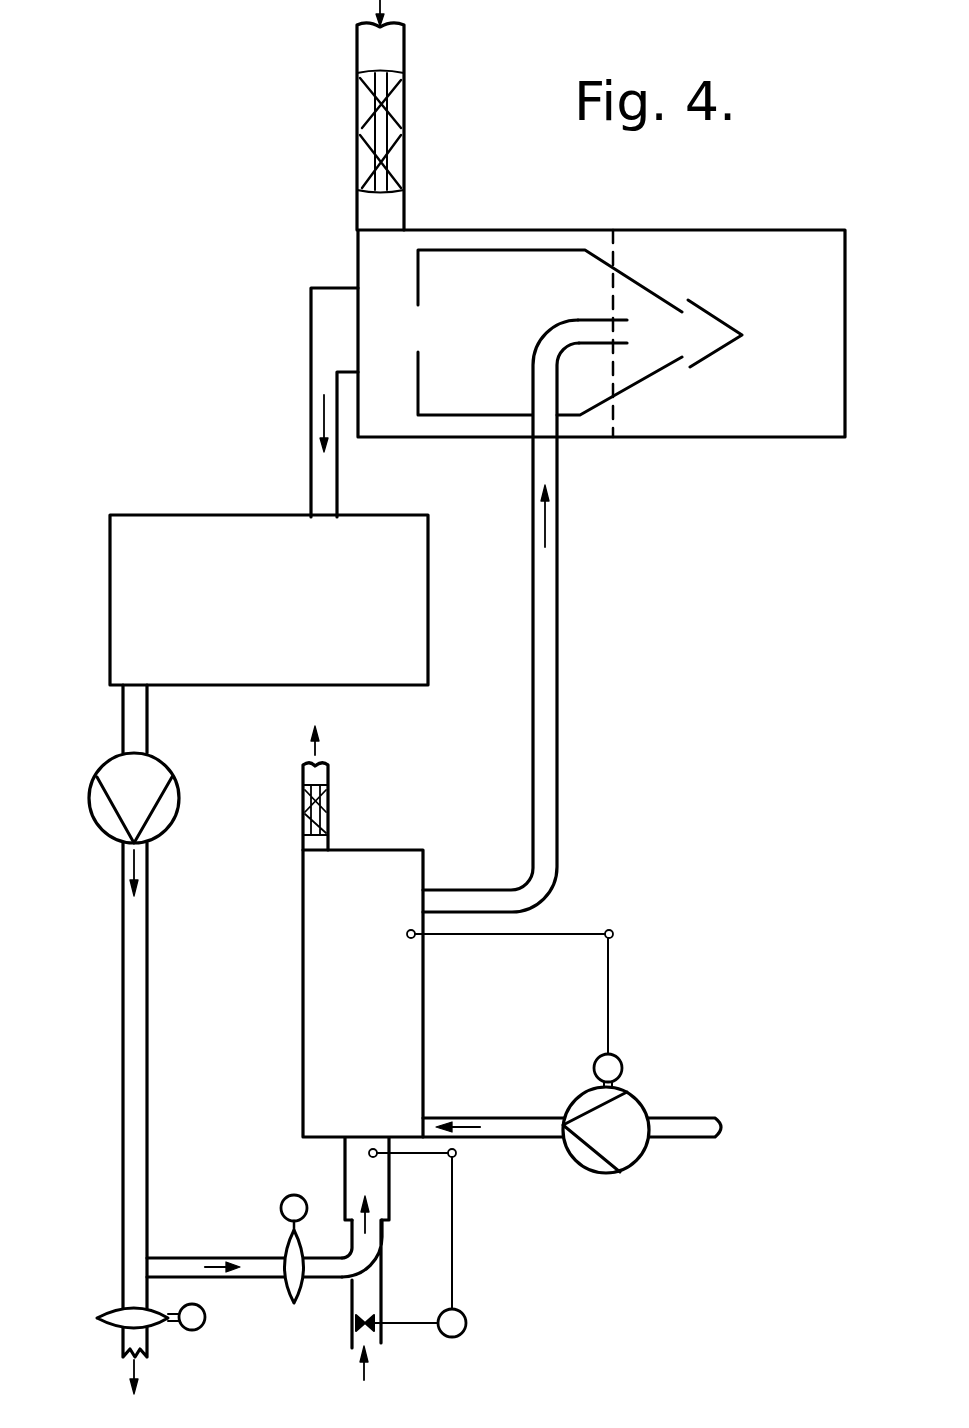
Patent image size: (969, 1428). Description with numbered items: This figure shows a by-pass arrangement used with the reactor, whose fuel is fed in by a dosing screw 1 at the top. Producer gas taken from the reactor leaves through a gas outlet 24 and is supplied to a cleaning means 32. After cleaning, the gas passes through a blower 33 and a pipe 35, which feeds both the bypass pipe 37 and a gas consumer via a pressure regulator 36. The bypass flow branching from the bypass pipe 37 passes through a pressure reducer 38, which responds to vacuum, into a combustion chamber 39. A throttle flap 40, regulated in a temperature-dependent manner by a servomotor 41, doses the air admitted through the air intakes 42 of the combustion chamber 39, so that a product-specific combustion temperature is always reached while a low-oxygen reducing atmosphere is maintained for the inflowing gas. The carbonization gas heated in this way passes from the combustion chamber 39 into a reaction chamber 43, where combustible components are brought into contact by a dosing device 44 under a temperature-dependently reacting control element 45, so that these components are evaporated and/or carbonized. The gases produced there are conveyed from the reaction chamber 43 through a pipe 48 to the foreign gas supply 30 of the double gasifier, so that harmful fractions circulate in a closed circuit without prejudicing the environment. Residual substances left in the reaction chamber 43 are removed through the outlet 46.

The dosing screw 1 is at (362, 152).
The gas outlet 24 is at (323, 355).
The foreign gas supply 30 is at (588, 326).
The cleaning means 32 is at (236, 518).
The blower 33 is at (96, 786).
The pipe 35 is at (148, 1292).
The pressure regulator 36 is at (203, 1327).
The bypass pipe 37 is at (238, 1257).
The pressure reducer 38 is at (283, 1197).
The combustion chamber 39 is at (342, 1155).
The throttle flap 40 is at (371, 1320).
The servomotor 41 is at (467, 1327).
The air intakes 42 is at (378, 1340).
The reaction chamber 43 is at (303, 1003).
The dosing device 44 is at (645, 1103).
The control element 45 is at (622, 1063).
The outlet 46 is at (304, 819).
The pipe 48 is at (545, 702).